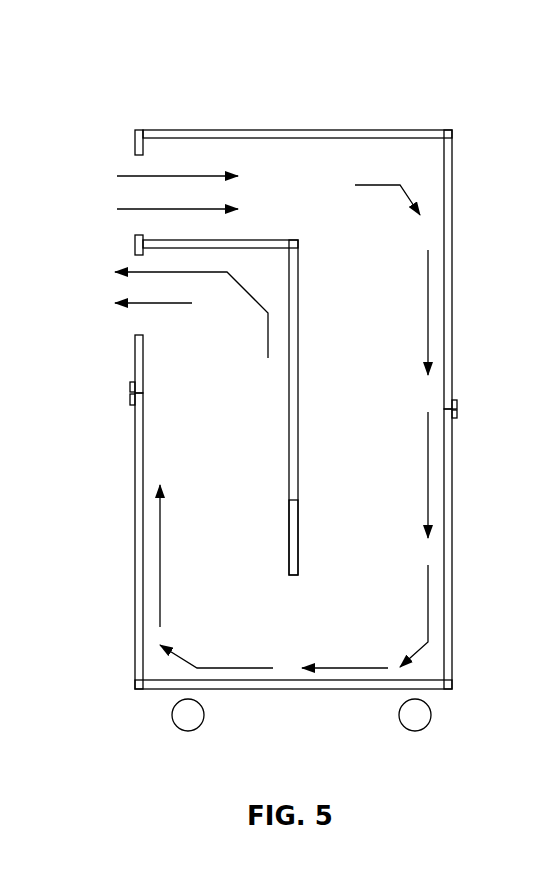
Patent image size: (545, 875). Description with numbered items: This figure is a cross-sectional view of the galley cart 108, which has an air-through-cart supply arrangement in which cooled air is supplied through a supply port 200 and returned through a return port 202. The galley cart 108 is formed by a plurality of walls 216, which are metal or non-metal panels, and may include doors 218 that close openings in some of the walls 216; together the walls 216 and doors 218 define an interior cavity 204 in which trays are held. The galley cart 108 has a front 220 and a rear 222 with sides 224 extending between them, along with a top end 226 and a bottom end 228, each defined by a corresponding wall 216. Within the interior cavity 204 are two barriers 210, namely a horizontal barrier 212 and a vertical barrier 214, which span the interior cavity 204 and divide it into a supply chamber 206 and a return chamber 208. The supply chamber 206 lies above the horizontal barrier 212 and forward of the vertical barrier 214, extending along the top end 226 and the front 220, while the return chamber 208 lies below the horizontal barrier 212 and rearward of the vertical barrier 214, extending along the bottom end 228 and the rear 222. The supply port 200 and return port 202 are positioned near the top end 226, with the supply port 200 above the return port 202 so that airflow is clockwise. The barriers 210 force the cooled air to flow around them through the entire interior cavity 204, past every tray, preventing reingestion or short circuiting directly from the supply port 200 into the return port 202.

The galley cart 108 is at (325, 87).
The supply port 200 is at (138, 166).
The return port 202 is at (136, 323).
The interior cavity 204 is at (378, 268).
The supply chamber 206 is at (302, 163).
The return chamber 208 is at (218, 393).
The barriers 210 is at (295, 538).
The horizontal barrier 212 is at (207, 240).
The vertical barrier 214 is at (295, 272).
The walls 216 is at (150, 131).
The doors 218 is at (453, 315).
The front 220 is at (453, 537).
The rear 222 is at (135, 655).
The sides 224 is at (352, 628).
The top end 226 is at (227, 129).
The bottom end 228 is at (327, 689).